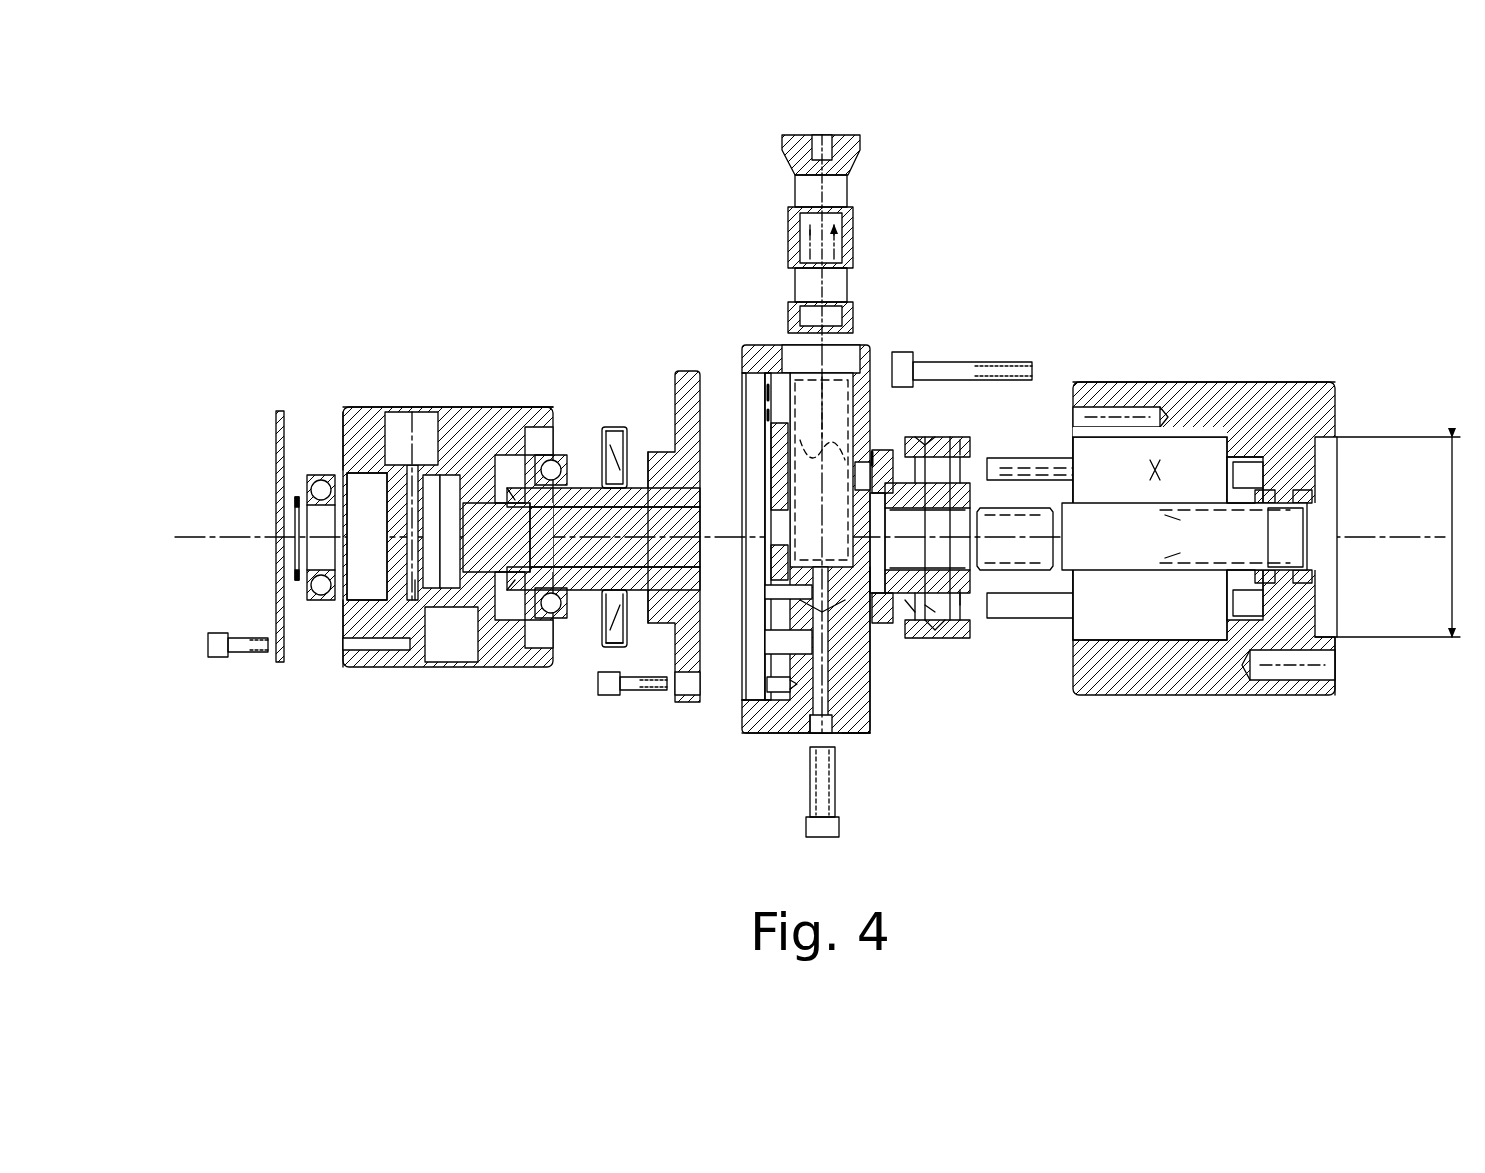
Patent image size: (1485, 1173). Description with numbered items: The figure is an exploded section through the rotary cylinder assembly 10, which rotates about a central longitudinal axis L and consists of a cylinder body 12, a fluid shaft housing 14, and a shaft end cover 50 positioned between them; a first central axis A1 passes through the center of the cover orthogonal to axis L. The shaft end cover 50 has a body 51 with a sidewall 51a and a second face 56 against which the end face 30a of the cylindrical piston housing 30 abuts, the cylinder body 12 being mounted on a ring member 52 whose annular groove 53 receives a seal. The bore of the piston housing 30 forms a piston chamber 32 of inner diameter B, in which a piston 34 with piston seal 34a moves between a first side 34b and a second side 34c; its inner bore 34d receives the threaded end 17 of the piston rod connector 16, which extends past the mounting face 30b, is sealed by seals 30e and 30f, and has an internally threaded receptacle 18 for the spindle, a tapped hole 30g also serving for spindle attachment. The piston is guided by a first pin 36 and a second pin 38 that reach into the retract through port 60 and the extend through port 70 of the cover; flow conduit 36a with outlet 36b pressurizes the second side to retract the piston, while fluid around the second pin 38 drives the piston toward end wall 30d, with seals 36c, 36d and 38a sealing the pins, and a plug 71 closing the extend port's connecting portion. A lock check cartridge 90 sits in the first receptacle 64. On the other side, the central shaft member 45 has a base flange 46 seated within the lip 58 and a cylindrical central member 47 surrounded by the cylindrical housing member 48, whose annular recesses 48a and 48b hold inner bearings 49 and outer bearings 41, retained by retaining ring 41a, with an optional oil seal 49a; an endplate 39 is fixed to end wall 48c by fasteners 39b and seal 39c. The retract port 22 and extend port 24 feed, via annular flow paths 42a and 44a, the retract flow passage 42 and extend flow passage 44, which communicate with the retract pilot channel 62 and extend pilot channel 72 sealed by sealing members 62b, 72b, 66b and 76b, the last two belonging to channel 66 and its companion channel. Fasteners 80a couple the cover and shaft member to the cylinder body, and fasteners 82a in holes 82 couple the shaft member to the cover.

The rotary cylinder assembly 10 is at (628, 848).
The cylinder body 12 is at (1274, 377).
The fluid shaft housing 14 is at (495, 720).
The piston rod connector 16 is at (1212, 497).
The threaded end 17 is at (998, 522).
The internally threaded receptacle 18 is at (1162, 532).
The retract port 22 is at (396, 412).
The extend port 24 is at (438, 653).
The piston housing 30 is at (1223, 678).
The end face 30a is at (1067, 685).
The mounting face 30b is at (1337, 408).
The end wall 30d is at (1100, 407).
The seal 30e is at (1305, 492).
The seal 30f is at (1273, 492).
The tapped hole 30g is at (1335, 665).
The piston chamber 32 is at (1220, 600).
The piston 34 is at (963, 435).
The piston seal 34a is at (935, 633).
The first side 34b is at (900, 592).
The second side 34c is at (970, 440).
The inner bore 34d is at (950, 535).
The first pin 36 is at (1063, 412).
The flow conduit 36a is at (1007, 452).
The outlet 36b is at (1155, 460).
The first seal 36c is at (870, 450).
The second seal 36d is at (918, 424).
The second pin 38 is at (1045, 622).
The seal 38a is at (922, 618).
The endplate 39 is at (274, 455).
The fasteners 39b is at (243, 658).
The seal 39c is at (342, 622).
The outer bearings 41 is at (321, 475).
The retaining ring 41a is at (297, 497).
The retract flow passage 42 is at (590, 490).
The annular flow path 42a is at (415, 587).
The extend flow passage 44 is at (585, 577).
The annular flow path 44a is at (447, 487).
The central shaft member 45 is at (648, 455).
The base flange 46 is at (688, 375).
The cylindrical central member 47 is at (577, 475).
The cylindrical housing member 48 is at (358, 405).
The annular recess 48a is at (523, 407).
The annular recess 48b is at (383, 477).
The end wall 48c is at (343, 410).
The inner bearings 49 is at (568, 408).
The oil seal 49a is at (615, 430).
The shaft end cover 50 is at (755, 343).
The body 51 is at (773, 733).
The sidewall 51a is at (850, 733).
The ring member 52 is at (892, 497).
The annular groove 53 is at (883, 640).
The second face 56 is at (867, 703).
The lip 58 is at (768, 700).
The retract through port 60 is at (815, 483).
The retract pilot channel 62 is at (770, 523).
The sealing member 62b is at (768, 502).
The first receptacle 64 is at (832, 533).
The channel 66 is at (772, 417).
The sealing member 66b is at (765, 400).
The extend through port 70 is at (822, 625).
The plug 71 is at (835, 793).
The extend pilot channel 72 is at (772, 593).
The sealing member 72b is at (768, 577).
The sealing member 76b is at (770, 628).
The fasteners 80a is at (915, 357).
The holes 82 is at (767, 688).
The fasteners 82a is at (608, 697).
The lock check cartridge 90 is at (856, 213).
The first central axis A1 is at (810, 733).
The inner diameter B is at (1398, 537).
The central longitudinal axis L is at (200, 537).